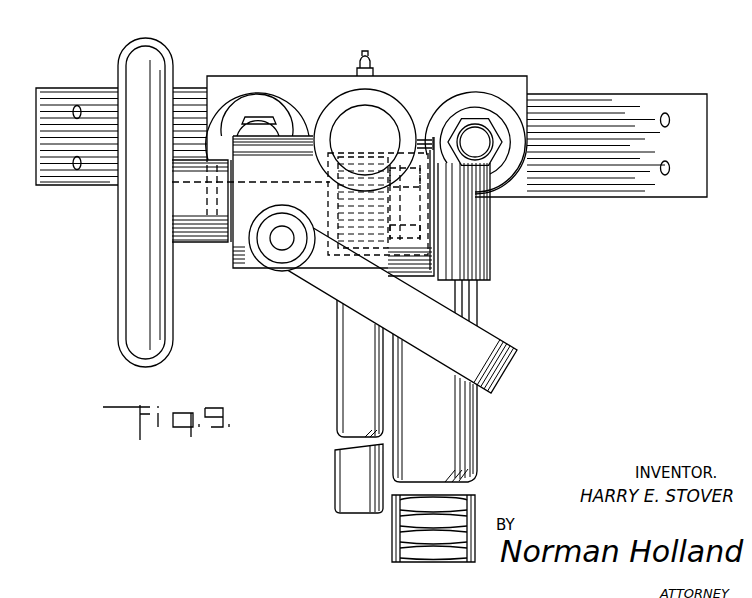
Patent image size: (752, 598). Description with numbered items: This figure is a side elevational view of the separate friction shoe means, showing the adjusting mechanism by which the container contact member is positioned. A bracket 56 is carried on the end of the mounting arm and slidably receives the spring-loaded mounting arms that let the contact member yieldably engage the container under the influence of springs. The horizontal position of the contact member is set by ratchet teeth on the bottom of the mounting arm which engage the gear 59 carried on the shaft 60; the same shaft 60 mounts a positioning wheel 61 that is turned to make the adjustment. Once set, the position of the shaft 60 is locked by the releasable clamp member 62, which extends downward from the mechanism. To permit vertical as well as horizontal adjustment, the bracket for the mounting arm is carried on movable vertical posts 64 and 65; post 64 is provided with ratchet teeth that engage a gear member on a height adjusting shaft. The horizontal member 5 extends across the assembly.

The mounting bar 5 is at (601, 104).
The bracket 56 is at (466, 80).
The gear 59 is at (377, 153).
The shaft 60 is at (290, 182).
The positioning wheel 61 is at (130, 44).
The releasable clamp member 62 is at (480, 336).
The vertical post 64 is at (478, 447).
The vertical post 65 is at (343, 341).